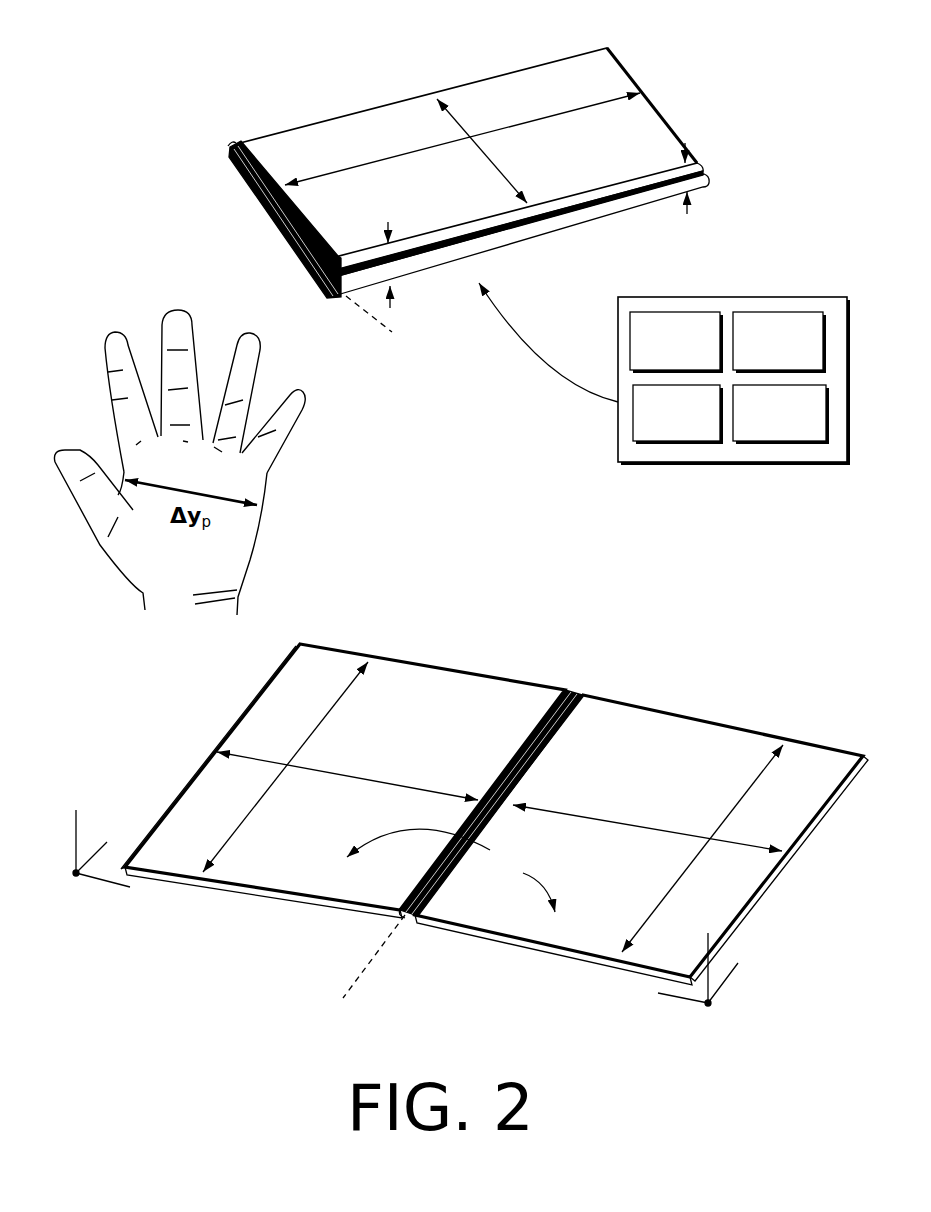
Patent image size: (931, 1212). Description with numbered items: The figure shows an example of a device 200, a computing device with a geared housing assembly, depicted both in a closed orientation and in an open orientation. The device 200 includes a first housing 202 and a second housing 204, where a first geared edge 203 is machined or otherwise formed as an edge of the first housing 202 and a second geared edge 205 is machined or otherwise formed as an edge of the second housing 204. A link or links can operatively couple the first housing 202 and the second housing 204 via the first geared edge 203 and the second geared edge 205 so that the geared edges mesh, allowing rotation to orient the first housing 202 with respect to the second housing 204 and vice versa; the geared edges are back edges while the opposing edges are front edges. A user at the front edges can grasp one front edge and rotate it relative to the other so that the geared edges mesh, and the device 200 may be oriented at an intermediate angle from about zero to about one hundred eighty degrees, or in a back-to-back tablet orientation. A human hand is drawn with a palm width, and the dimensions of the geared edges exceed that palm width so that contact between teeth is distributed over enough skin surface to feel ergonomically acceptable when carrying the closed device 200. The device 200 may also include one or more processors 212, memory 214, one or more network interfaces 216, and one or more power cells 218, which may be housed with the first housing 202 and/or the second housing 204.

The device 200 is at (470, 518).
The first housing 202 is at (537, 235).
The first geared edge 203 is at (336, 293).
The second housing 204 is at (500, 78).
The second geared edge 205 is at (228, 150).
The processors 212 is at (676, 342).
The memory 214 is at (779, 342).
The network interfaces 216 is at (678, 414).
The power cells 218 is at (781, 414).